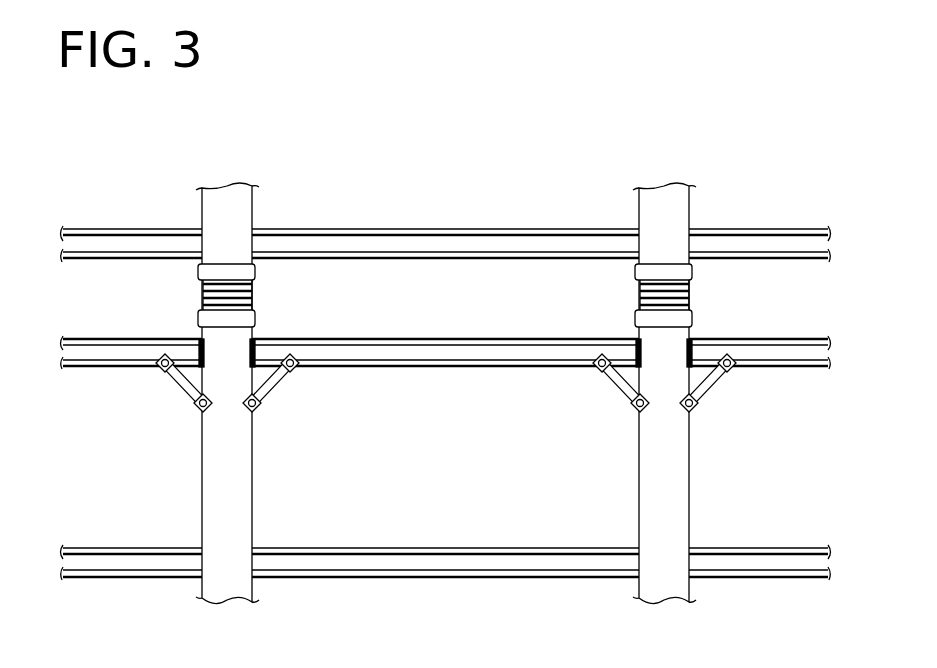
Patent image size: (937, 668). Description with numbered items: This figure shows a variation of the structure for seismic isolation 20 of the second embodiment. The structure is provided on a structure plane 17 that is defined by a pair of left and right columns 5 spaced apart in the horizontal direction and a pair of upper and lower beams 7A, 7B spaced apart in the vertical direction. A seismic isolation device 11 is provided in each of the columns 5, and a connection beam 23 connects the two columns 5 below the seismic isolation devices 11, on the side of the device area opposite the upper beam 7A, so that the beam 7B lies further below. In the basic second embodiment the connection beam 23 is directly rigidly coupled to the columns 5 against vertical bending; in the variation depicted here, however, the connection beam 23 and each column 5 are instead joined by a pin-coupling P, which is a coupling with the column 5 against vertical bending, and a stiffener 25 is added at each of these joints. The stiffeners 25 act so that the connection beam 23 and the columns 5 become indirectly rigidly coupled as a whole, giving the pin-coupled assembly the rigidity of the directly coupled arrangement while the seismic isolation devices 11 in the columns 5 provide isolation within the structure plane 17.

The structure for seismic isolation 20 is at (497, 188).
The upper beam 7A is at (141, 229).
The lower beam 7B is at (125, 578).
The connection beam 23 is at (82, 337).
The seismic isolation device 11 is at (252, 294).
The pin-coupling P is at (247, 366).
The stiffener 25 is at (183, 392).
The structure plane 17 is at (425, 470).
The column 5 is at (252, 500).